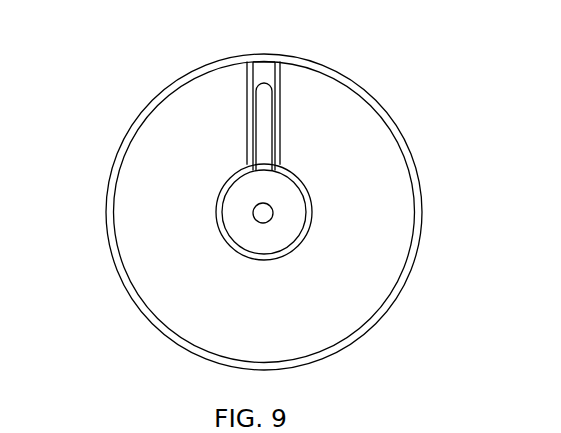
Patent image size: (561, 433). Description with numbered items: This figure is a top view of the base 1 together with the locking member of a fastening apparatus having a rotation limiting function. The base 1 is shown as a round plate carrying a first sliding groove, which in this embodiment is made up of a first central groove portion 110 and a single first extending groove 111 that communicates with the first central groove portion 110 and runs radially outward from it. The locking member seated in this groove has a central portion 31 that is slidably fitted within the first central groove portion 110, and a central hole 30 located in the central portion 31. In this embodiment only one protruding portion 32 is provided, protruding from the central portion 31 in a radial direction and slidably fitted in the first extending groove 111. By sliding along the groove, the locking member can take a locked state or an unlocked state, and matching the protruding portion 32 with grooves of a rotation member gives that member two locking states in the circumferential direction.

The base 1 is at (143, 110).
The first central groove portion 110 is at (222, 233).
The first extending groove 111 is at (262, 75).
The central hole 30 is at (270, 209).
The central portion 31 is at (300, 235).
The protruding portion 32 is at (263, 140).